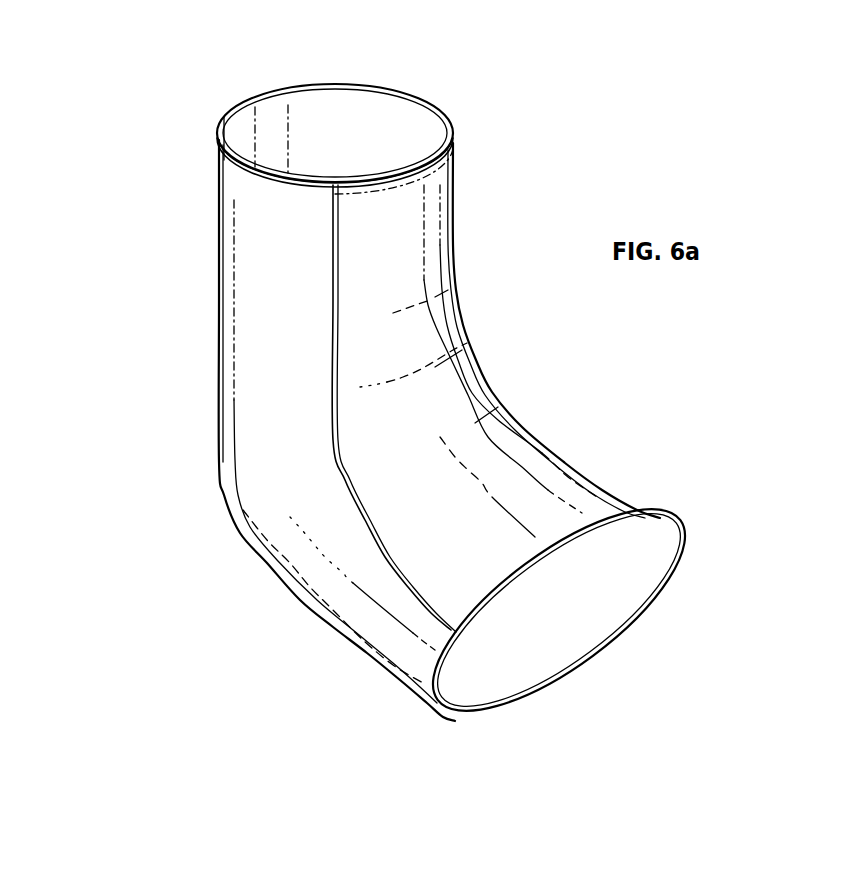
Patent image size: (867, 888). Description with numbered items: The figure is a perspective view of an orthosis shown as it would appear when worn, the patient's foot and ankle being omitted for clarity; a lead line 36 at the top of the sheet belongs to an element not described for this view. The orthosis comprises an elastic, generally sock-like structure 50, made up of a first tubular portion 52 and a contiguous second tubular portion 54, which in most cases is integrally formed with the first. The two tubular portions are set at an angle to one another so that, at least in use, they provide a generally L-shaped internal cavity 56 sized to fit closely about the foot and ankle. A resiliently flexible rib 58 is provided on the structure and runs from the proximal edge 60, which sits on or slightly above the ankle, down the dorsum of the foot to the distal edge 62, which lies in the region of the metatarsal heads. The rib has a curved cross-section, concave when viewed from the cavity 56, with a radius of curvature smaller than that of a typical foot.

The connecting tube 36 is at (497, 0).
The sock-like structure 50 is at (178, 501).
The first tubular portion 52 is at (283, 272).
The second tubular portion 54 is at (353, 583).
The internal cavity 56 is at (600, 599).
The resiliently flexible rib 58 is at (408, 283).
The proximal edge 60 is at (244, 107).
The distal edge 62 is at (513, 687).